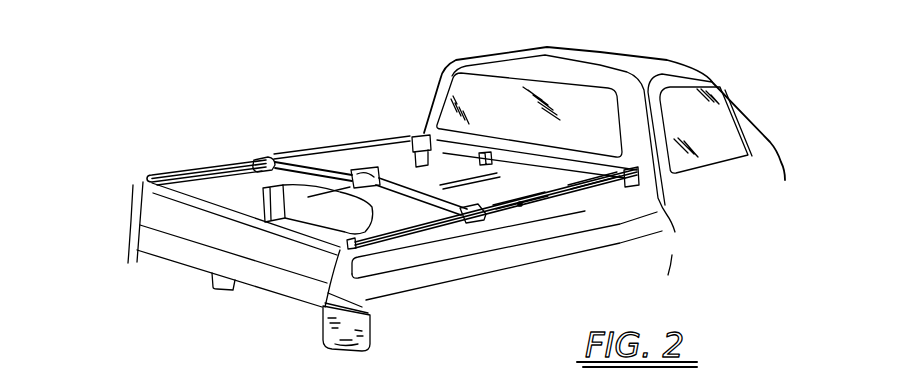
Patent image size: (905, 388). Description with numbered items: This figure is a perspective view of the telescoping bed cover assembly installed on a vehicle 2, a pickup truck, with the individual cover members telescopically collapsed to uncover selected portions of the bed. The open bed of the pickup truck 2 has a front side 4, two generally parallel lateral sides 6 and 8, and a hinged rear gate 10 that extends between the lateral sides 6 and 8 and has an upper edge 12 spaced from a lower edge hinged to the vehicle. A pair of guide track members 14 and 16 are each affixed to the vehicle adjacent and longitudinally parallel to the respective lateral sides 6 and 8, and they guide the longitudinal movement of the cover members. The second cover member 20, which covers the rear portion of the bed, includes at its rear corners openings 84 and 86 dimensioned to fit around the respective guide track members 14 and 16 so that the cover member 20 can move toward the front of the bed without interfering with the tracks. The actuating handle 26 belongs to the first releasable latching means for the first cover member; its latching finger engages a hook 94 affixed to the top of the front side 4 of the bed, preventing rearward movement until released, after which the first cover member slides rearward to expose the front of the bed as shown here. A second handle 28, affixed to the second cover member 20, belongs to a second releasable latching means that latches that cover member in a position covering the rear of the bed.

The vehicle 2 is at (597, 62).
The front side 4 is at (563, 182).
The lateral side 6 is at (213, 190).
The lateral side 8 is at (593, 233).
The rear gate 10 is at (157, 208).
The upper edge 12 is at (227, 210).
The guide track member 14 is at (158, 169).
The guide track member 16 is at (373, 240).
The second cover member 20 is at (521, 205).
The actuating handle 26 is at (420, 167).
The handle 28 is at (352, 180).
The opening 84 is at (250, 160).
The opening 86 is at (462, 212).
The hook 94 is at (495, 157).